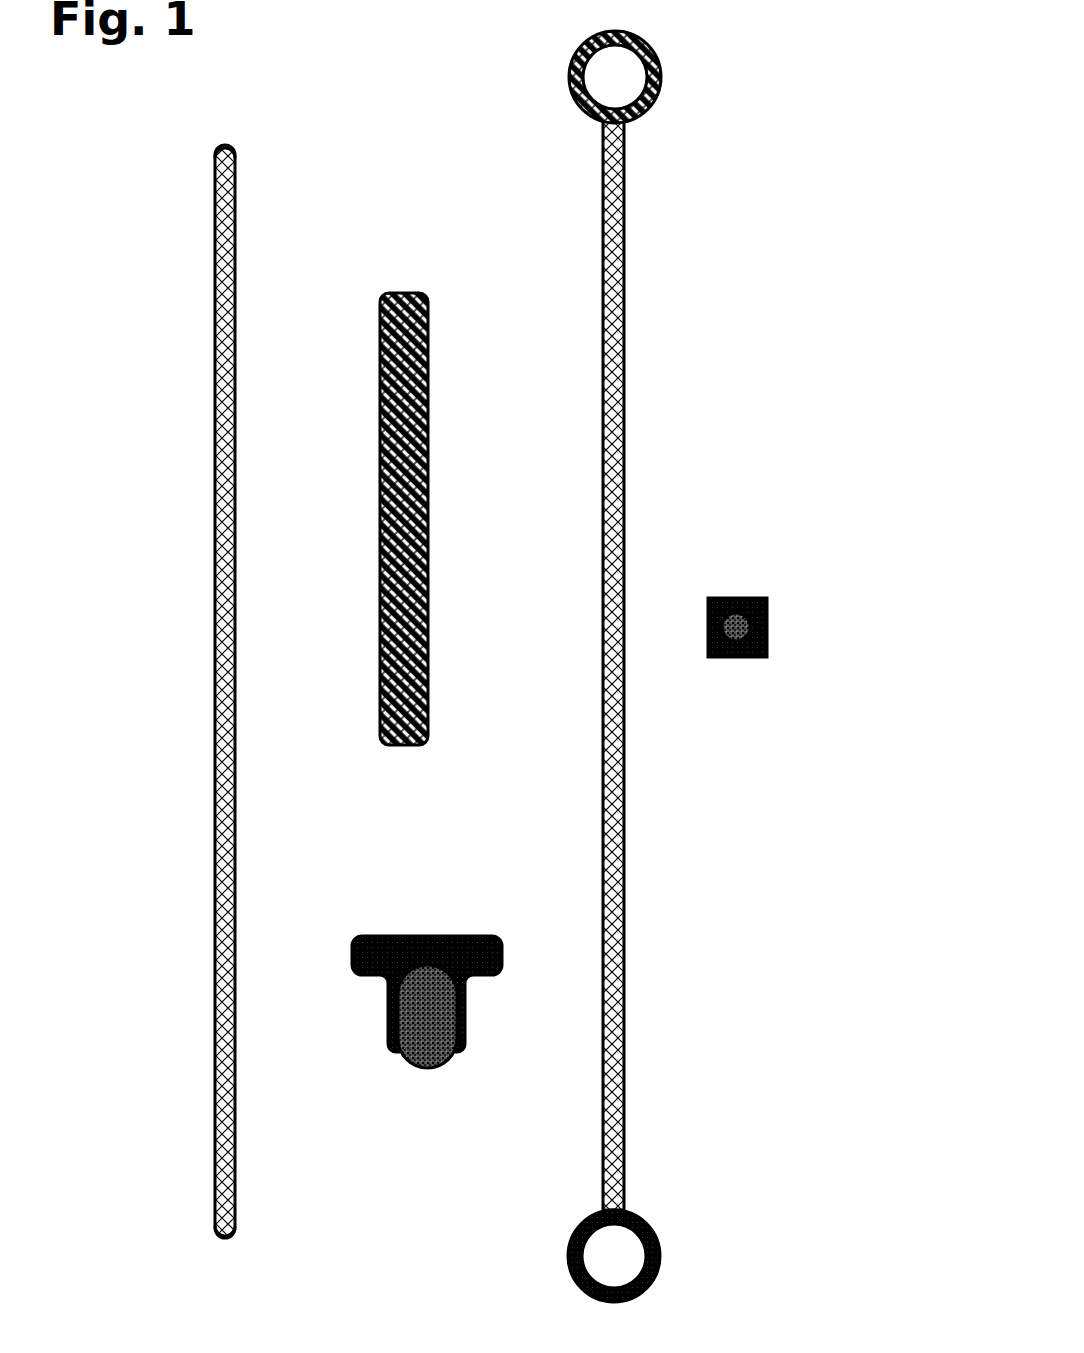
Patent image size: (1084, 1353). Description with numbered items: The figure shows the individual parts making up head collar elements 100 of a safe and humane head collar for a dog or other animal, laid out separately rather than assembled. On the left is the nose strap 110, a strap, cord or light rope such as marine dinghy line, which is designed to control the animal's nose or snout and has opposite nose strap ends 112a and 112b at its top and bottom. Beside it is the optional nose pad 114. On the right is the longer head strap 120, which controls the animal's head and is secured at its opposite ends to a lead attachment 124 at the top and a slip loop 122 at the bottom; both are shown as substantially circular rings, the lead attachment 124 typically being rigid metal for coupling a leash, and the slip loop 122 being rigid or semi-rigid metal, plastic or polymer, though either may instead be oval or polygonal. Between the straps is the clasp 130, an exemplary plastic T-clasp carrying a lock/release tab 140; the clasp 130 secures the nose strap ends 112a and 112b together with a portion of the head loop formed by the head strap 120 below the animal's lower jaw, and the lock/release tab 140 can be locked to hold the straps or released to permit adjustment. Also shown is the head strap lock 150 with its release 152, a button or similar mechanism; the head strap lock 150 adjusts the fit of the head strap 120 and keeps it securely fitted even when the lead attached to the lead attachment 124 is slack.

The head collar elements 100 is at (848, 150).
The nose strap 110 is at (215, 555).
The nose strap end 112a is at (220, 147).
The nose strap end 112b is at (218, 1238).
The optional nose pad 114 is at (408, 293).
The head strap 120 is at (624, 424).
The slip loop 122 is at (660, 1250).
The lead attachment 124 is at (570, 68).
The clasp 130 is at (412, 936).
The lock/release tab 140 is at (418, 1029).
The head strap lock 150 is at (767, 630).
The release 152 is at (742, 657).